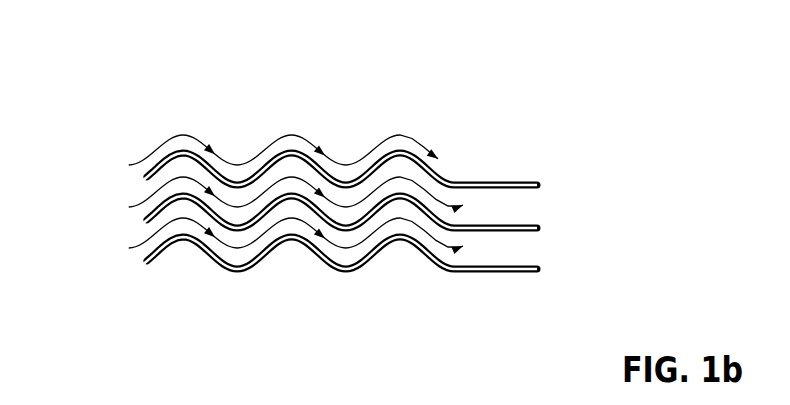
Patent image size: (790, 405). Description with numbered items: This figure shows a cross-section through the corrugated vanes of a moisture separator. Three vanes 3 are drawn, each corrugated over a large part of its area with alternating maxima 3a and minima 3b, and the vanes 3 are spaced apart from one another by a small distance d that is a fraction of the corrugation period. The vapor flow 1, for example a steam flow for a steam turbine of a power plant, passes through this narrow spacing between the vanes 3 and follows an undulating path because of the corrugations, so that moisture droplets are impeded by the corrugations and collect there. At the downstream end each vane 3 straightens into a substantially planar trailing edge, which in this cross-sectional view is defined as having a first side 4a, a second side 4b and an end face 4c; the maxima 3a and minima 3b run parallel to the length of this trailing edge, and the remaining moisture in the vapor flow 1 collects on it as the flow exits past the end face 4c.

The vapor flow 1 is at (298, 173).
The vane 3 is at (222, 61).
The maxima 3a is at (293, 243).
The minima 3b is at (345, 330).
The first side 4a is at (487, 182).
The second side 4b is at (522, 200).
The end face 4c is at (540, 226).
The plate spacing distance d is at (62, 178).